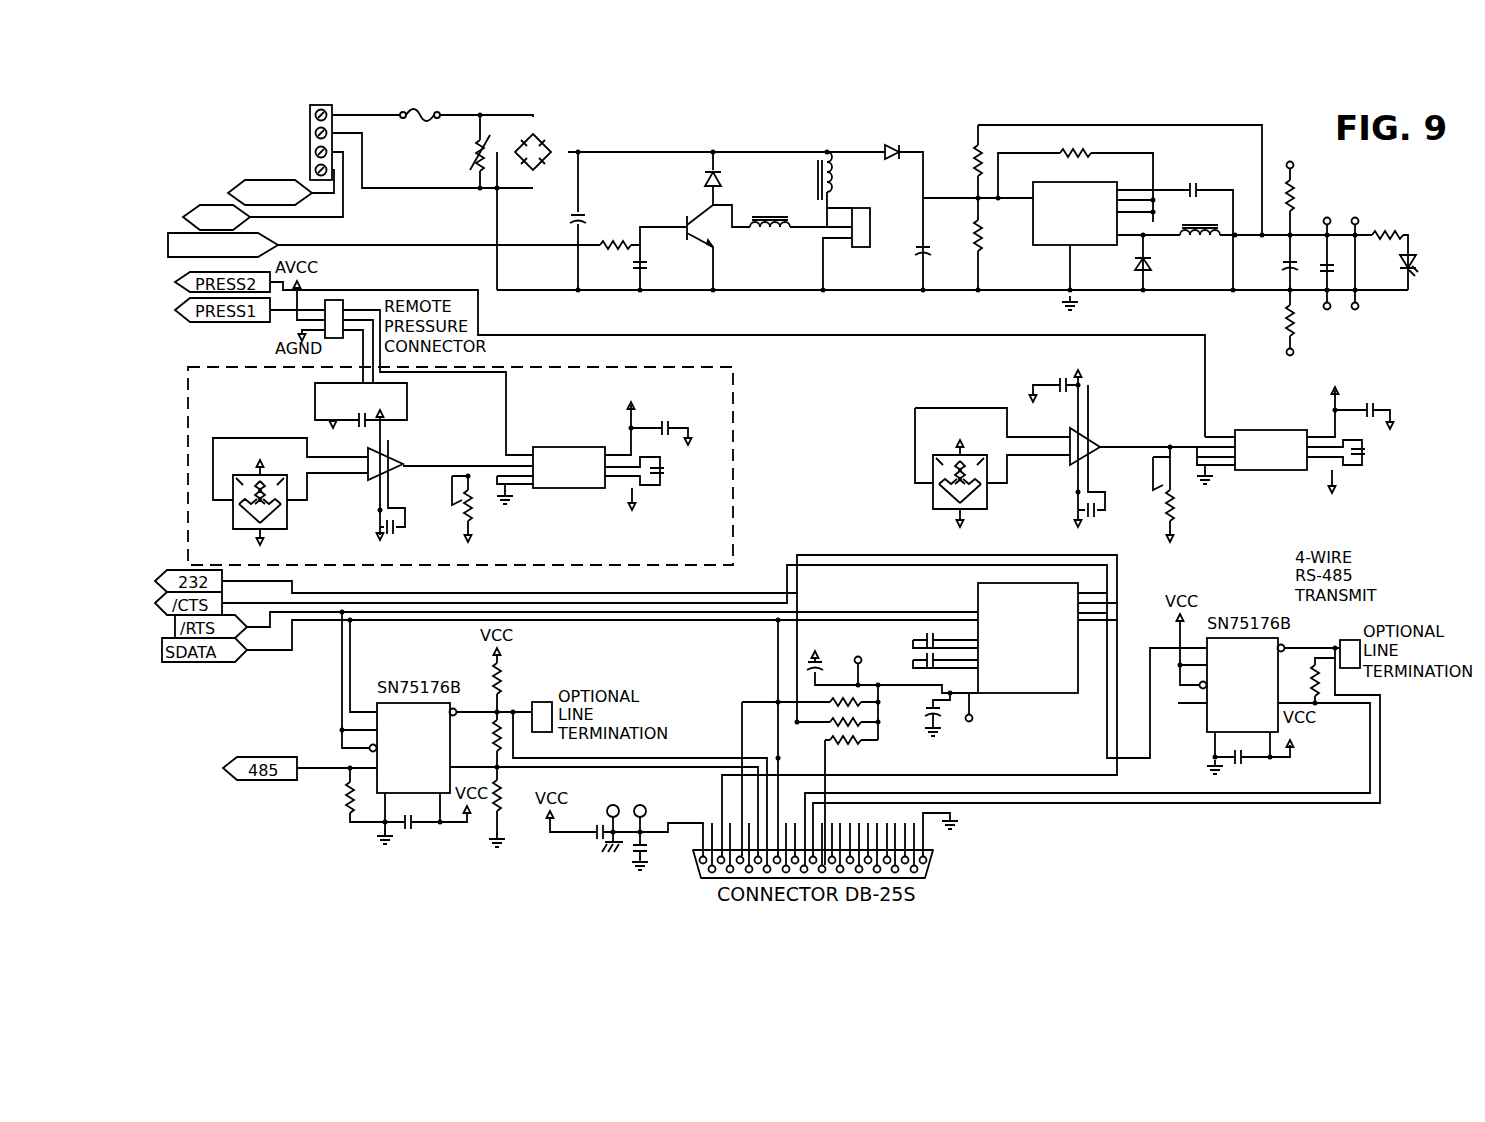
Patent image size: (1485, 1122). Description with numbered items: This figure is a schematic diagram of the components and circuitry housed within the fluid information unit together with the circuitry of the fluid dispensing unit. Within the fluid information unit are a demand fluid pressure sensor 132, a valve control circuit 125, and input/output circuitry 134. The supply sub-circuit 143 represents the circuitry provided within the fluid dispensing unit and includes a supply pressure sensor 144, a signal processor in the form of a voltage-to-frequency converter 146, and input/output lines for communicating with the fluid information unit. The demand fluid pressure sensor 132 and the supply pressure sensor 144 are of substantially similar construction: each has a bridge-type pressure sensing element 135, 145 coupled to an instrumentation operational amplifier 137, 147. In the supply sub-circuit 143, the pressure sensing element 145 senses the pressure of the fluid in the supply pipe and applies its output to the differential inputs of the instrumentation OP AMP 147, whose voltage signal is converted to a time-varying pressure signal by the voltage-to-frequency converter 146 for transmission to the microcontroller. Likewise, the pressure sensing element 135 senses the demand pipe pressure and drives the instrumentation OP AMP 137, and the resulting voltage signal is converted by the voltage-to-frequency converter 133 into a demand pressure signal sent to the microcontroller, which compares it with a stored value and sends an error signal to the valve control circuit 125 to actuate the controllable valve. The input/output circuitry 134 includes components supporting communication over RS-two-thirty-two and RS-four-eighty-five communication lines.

The valve control circuit 125 is at (770, 140).
The demand fluid pressure sensor 132 is at (897, 456).
The voltage-to-frequency converter 133 is at (1290, 458).
The input/output circuitry 134 is at (740, 657).
The bridge-type pressure sensing element 135 is at (931, 503).
The instrumentation operational amplifier 137 is at (1090, 437).
The supply sub-circuit 143 is at (736, 462).
The supply pressure sensor 144 is at (258, 437).
The bridge-type pressure sensing element 145 is at (236, 513).
The voltage-to-frequency converter 146 is at (588, 475).
The instrumentation operational amplifier 147 is at (398, 462).